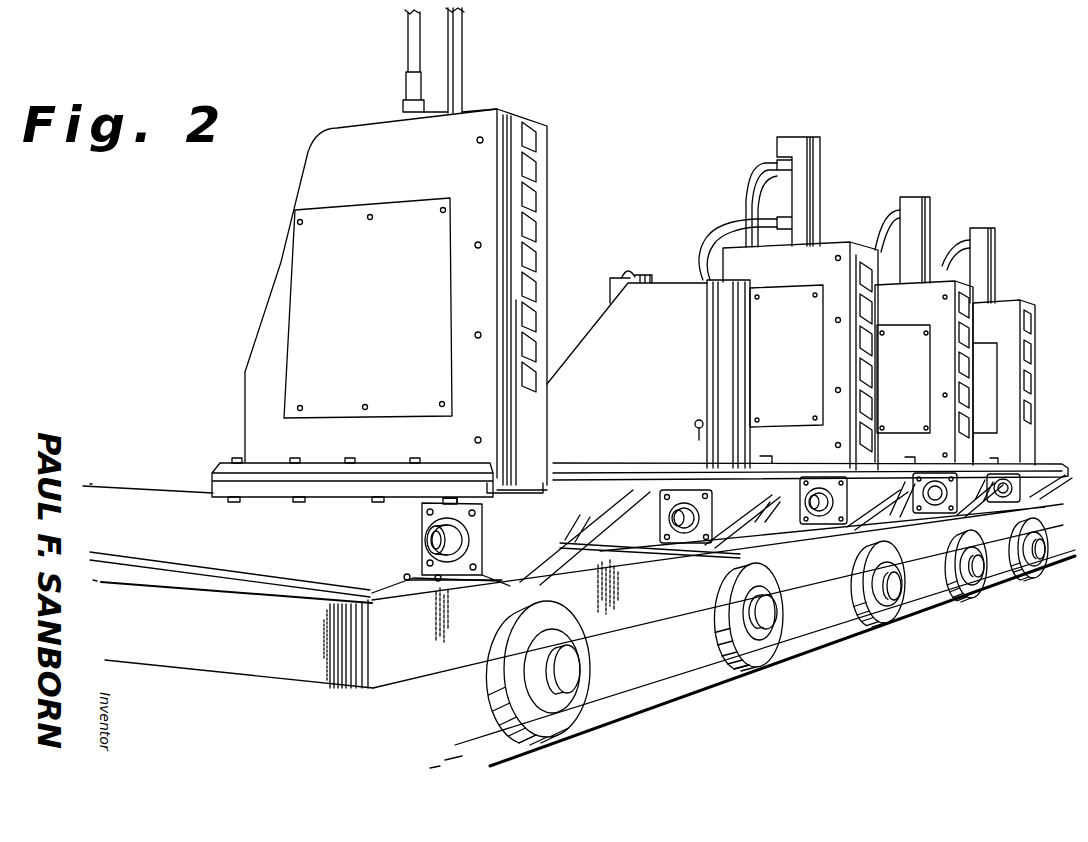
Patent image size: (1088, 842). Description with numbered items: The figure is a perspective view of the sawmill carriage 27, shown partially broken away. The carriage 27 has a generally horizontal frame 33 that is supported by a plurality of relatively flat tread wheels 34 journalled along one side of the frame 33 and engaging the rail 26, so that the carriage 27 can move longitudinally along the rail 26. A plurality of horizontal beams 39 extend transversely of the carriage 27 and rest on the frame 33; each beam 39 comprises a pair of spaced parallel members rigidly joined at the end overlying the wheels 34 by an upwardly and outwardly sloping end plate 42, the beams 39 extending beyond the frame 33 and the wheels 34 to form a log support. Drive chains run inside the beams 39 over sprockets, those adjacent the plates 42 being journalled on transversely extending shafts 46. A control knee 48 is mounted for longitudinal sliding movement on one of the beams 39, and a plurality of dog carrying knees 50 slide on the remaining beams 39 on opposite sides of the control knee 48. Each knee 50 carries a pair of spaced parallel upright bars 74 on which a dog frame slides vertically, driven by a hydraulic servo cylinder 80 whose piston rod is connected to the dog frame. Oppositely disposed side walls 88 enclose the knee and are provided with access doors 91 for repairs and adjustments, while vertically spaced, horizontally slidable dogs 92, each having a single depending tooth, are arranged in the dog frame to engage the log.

The rail 26 is at (683, 683).
The carriage 27 is at (343, 707).
The frame 33 is at (192, 660).
The flat tread wheels 34 is at (560, 733).
The horizontal beams 39 is at (153, 468).
The sloping end plate 42 is at (512, 582).
The transversely extending shafts 46 is at (420, 541).
The control knee 48 is at (590, 315).
The dog carrying knees 50 is at (648, 249).
The upright bars 74 is at (438, 62).
The hydraulic servo cylinder 80 is at (405, 46).
The side walls 88 is at (318, 170).
The access doors 91 is at (352, 212).
The dogs 92 is at (536, 155).